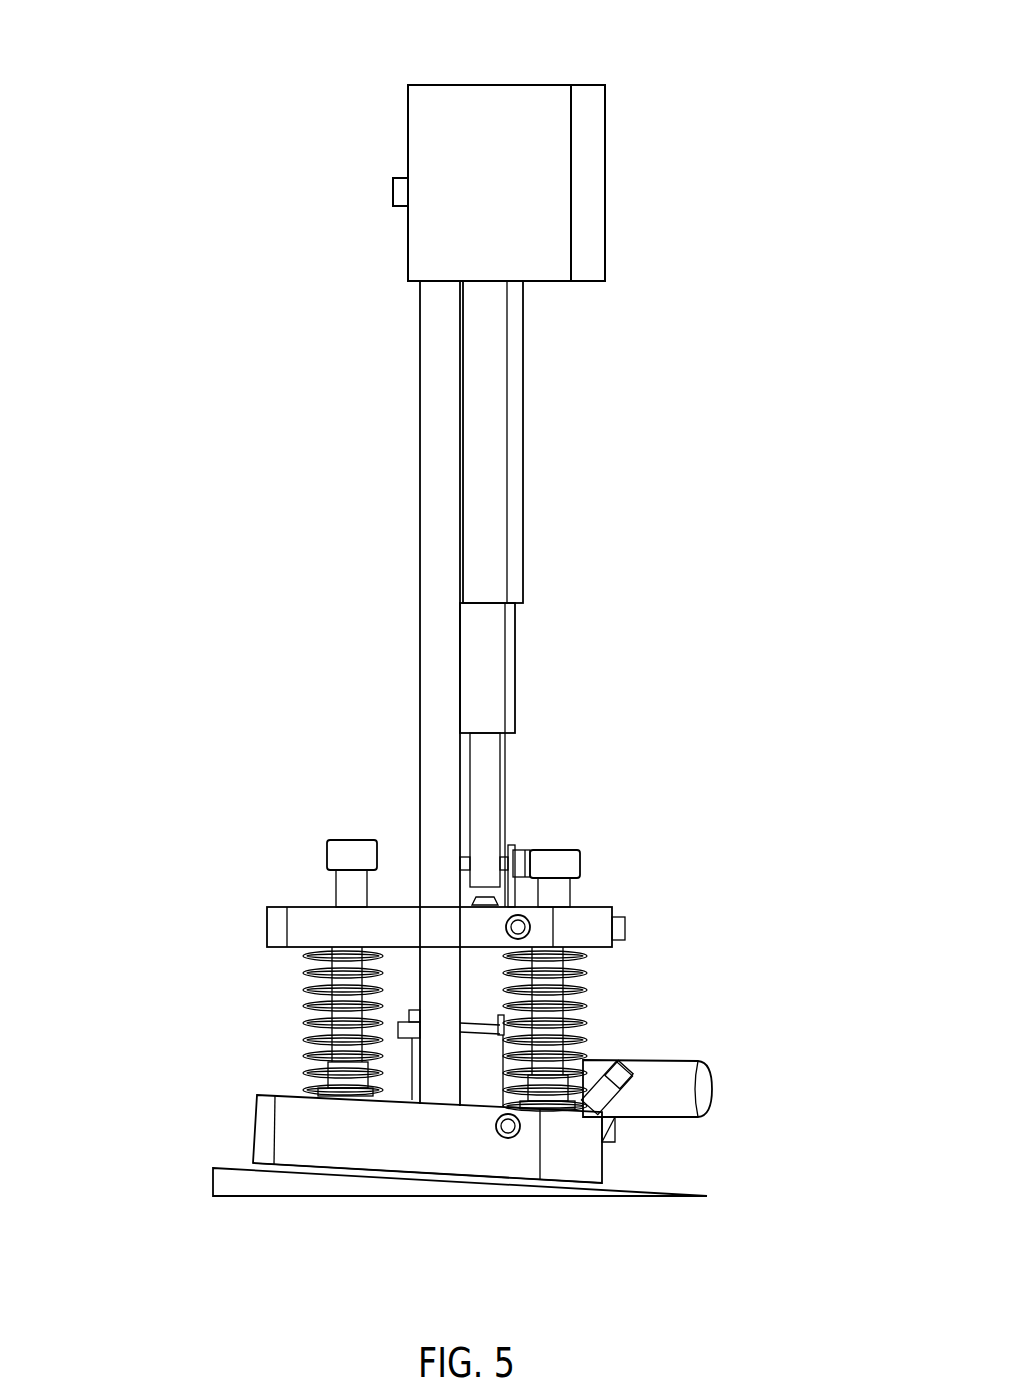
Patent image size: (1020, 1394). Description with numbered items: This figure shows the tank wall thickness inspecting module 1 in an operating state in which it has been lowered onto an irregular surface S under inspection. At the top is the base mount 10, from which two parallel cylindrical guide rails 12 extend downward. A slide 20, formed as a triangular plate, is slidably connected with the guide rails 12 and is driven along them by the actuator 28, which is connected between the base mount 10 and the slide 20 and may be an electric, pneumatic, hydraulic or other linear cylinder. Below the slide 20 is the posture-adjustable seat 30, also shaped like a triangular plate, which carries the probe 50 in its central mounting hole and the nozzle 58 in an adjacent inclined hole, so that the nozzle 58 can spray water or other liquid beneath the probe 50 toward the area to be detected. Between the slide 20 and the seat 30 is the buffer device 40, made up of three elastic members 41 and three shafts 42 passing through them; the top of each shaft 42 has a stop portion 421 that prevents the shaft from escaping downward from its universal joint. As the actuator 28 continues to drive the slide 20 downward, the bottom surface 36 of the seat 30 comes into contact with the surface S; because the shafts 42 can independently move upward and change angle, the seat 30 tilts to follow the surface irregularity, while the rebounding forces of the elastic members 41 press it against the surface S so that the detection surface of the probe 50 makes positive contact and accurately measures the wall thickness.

The tank wall thickness inspecting module 1 is at (308, 140).
The base mount 10 is at (590, 167).
The guide rails 12 is at (437, 650).
The slide 20 is at (275, 928).
The actuator 28 is at (487, 462).
The posture-adjustable seat 30 is at (265, 1138).
The bottom surface 36 is at (320, 1168).
The buffer device 40 is at (270, 998).
The elastic members 41 is at (305, 1037).
The shafts 42 is at (338, 885).
The stop portion 421 is at (338, 842).
The probe 50 is at (480, 1062).
The nozzle 58 is at (610, 1073).
The surface under inspection S is at (650, 1190).